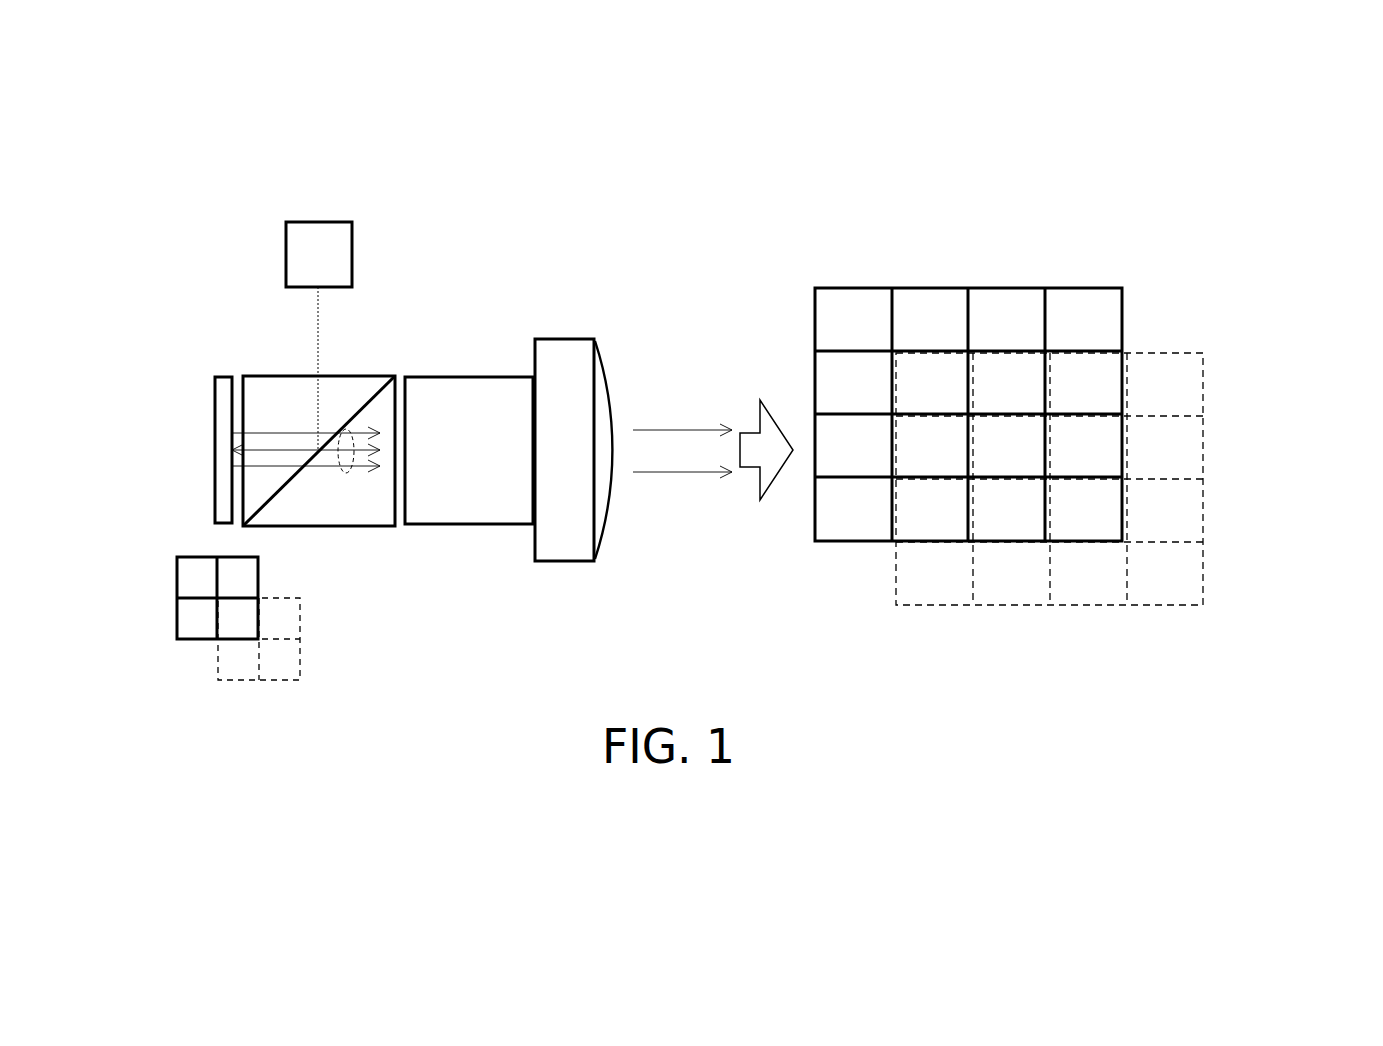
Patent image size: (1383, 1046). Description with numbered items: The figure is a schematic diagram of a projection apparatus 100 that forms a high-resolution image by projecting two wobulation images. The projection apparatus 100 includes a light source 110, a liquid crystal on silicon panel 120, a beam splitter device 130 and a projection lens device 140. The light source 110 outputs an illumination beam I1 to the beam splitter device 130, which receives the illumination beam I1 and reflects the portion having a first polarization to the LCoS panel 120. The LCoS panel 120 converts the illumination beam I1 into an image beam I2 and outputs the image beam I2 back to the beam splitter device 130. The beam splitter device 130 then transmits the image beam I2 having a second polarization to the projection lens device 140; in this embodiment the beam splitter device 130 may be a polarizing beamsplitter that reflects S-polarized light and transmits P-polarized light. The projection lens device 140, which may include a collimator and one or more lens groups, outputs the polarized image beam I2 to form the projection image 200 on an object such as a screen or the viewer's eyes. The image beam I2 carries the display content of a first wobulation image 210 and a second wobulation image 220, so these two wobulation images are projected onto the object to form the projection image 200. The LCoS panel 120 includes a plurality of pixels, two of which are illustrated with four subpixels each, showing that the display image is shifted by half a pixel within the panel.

The projection apparatus 100 is at (1338, 698).
The light source 110 is at (318, 222).
The liquid crystal on silicon (LCoS) panel 120 is at (215, 440).
The beam splitter device 130 is at (312, 526).
The projection lens device 140 is at (595, 313).
The projection image 200 is at (1090, 438).
The first wobulation image 210 is at (1123, 317).
The second wobulation image 220 is at (1098, 479).
The illumination beam I1 is at (318, 322).
The image beam I2 is at (351, 473).